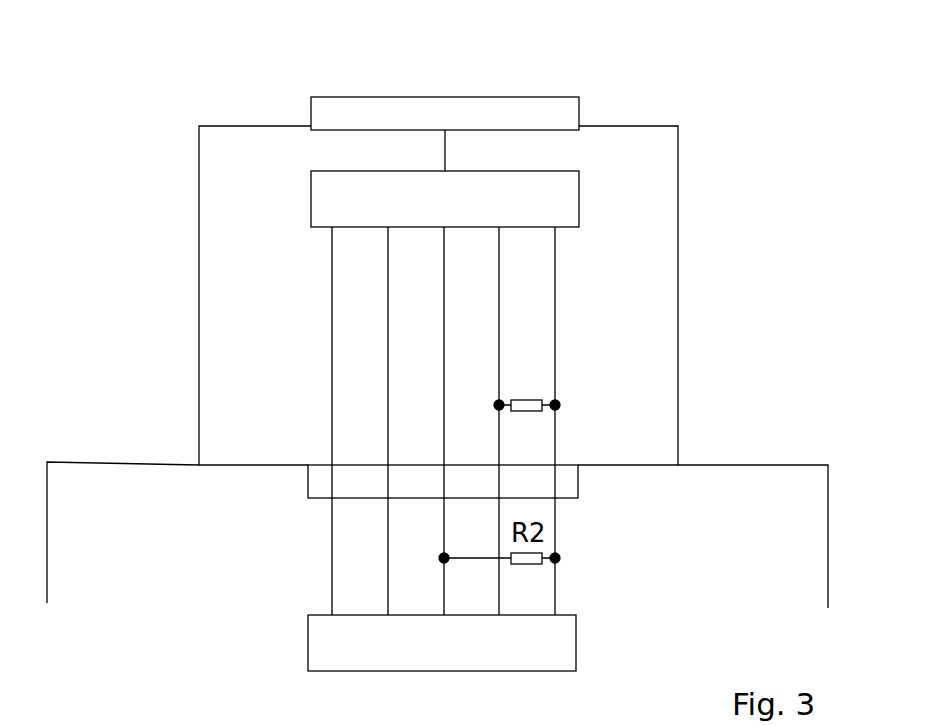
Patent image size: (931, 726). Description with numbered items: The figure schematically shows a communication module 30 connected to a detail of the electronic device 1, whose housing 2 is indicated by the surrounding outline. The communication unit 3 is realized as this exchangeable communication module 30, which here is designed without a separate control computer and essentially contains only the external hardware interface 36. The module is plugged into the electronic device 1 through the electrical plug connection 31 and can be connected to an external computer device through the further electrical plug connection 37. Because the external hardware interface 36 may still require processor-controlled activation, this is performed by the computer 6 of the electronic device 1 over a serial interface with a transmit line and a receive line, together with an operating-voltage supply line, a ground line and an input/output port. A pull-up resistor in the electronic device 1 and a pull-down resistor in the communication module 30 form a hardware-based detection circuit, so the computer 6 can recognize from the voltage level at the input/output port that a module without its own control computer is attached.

The electronic device 1 is at (60, 436).
The housing 2 is at (742, 463).
The communication unit 3 is at (695, 106).
The communication module 30 is at (680, 178).
The electrical plug connection 31 is at (578, 487).
The external hardware interface 36 is at (462, 217).
The further electrical plug connection 37 is at (518, 98).
The computer 6 is at (577, 648).